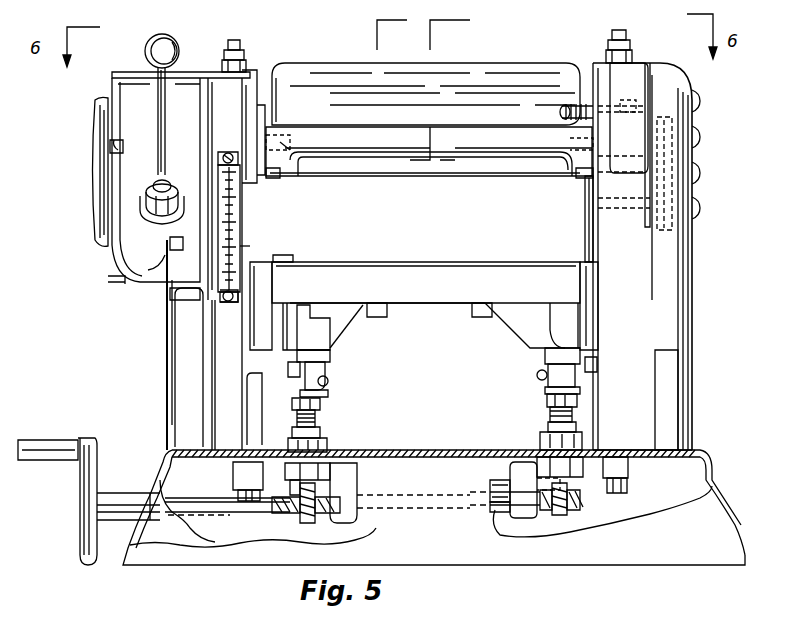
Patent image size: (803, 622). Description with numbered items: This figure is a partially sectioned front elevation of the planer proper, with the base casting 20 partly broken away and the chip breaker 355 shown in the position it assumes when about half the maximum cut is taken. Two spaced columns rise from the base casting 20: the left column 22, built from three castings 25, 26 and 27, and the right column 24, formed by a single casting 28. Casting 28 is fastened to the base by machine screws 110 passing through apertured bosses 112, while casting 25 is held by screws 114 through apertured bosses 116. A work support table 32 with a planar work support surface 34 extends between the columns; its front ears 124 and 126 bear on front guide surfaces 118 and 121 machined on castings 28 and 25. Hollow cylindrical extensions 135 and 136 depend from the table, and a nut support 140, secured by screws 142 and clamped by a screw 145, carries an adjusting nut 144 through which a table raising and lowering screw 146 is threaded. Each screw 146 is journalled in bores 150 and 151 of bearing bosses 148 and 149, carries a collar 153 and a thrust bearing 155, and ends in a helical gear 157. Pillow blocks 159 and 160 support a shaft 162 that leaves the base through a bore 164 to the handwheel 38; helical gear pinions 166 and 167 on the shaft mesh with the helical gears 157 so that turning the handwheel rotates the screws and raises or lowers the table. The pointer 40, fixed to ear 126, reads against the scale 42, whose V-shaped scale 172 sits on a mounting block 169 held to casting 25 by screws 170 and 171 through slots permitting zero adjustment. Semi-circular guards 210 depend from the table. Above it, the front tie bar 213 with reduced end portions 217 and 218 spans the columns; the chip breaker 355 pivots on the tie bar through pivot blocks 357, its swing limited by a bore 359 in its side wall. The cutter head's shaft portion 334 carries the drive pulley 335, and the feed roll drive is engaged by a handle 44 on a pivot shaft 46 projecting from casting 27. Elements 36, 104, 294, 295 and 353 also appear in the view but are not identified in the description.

The main base casting 20 is at (710, 516).
The left column 22 is at (165, 335).
The right column 24 is at (700, 287).
The casting 25 is at (215, 412).
The casting 26 is at (180, 357).
The casting 27 is at (113, 72).
The casting 28 is at (645, 318).
The work support table 32 is at (428, 292).
The work support surface 34 is at (440, 262).
The lock nut 36 is at (322, 400).
The handwheel 38 is at (96, 470).
The pointer 40 is at (272, 258).
The scale 42 is at (243, 228).
The handle 44 is at (158, 100).
The pivot shaft 46 is at (158, 185).
The rack teeth 104 is at (672, 222).
The machine screws 110 is at (628, 510).
The apertured boss 112 is at (630, 497).
The screws 114 is at (238, 493).
The apertured bosses 116 is at (236, 471).
The front guide surface 118 is at (602, 232).
The front guide surface 121 is at (262, 200).
The front ear 124 is at (600, 286).
The front ear 126 is at (272, 288).
The cylindrical extension 135 is at (332, 330).
The cylindrical extension 136 is at (538, 310).
The nut support 140 is at (330, 366).
The screws 142 is at (315, 344).
The adjusting nut 144 is at (330, 393).
The screw 145 is at (332, 380).
The table raising and lowering screw 146 is at (318, 412).
The bearing boss 148 is at (540, 478).
The bearing boss 149 is at (345, 476).
The vertical bore 150 is at (560, 492).
The vertical bore 151 is at (296, 484).
The collar 153 is at (322, 430).
The thrust bearing 155 is at (330, 446).
The helical gear 157 is at (278, 518).
The pillow block 159 is at (357, 488).
The pillow block 160 is at (510, 482).
The shaft 162 is at (498, 512).
The bore 164 is at (206, 520).
The helical gear pinion 166 is at (305, 525).
The helical gear pinion 167 is at (552, 518).
The mounting block 169 is at (220, 295).
The screw 170 is at (232, 304).
The screw 171 is at (226, 152).
The scale 172 is at (242, 246).
The guard 210 is at (372, 304).
The front tie bar 213 is at (478, 134).
The reduced portion 217 is at (290, 178).
The reduced portion 218 is at (570, 176).
The bolt 294 is at (237, 45).
The nut 295 is at (245, 58).
The shaft portion 334 is at (638, 160).
The drive pulley 335 is at (642, 193).
The pin 353 is at (626, 103).
The chip breaker 355 is at (490, 57).
The pivot block 357 is at (292, 140).
The bore 359 is at (570, 106).